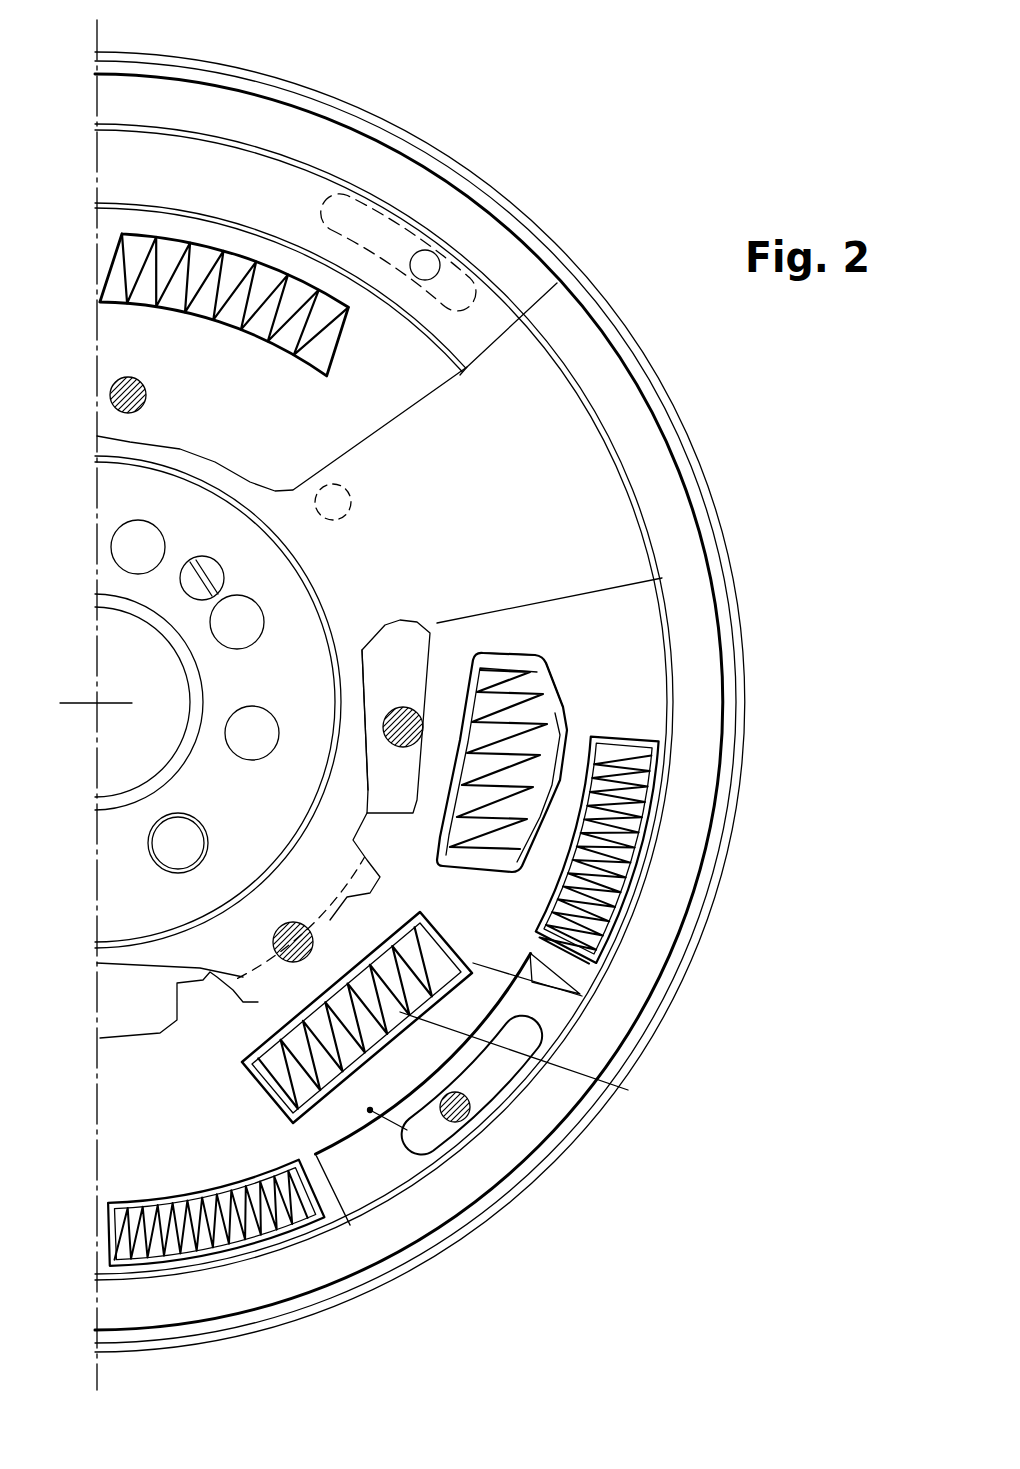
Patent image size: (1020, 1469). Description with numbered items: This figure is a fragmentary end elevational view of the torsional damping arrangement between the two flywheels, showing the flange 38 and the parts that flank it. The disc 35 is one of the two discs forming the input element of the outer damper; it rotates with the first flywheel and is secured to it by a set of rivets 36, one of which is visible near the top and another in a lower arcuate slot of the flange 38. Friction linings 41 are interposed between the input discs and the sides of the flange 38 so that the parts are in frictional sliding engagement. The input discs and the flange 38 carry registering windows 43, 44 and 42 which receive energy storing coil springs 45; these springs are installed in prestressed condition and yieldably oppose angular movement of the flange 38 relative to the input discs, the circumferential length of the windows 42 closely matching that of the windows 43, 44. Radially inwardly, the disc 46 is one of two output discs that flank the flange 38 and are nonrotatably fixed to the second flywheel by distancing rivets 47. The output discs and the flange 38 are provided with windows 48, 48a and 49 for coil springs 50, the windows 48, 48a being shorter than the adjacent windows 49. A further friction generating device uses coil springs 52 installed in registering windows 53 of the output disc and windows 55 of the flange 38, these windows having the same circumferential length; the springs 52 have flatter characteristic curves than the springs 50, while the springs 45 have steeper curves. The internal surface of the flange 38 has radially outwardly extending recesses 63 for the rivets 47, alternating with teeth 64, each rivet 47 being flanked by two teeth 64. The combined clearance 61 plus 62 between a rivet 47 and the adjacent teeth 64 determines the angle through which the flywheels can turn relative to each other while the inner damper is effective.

The disc 35 is at (497, 327).
The rivets 36 is at (438, 260).
The flange 38 is at (603, 607).
The friction linings 41 is at (467, 1222).
The windows 42 is at (413, 1240).
The windows 43 is at (357, 1017).
The windows 44 is at (390, 1273).
The coil springs 45 is at (636, 827).
The disc 46 is at (393, 390).
The rivets 47 is at (280, 930).
The window 48 is at (502, 762).
The window 48a is at (513, 668).
The windows 49 is at (541, 672).
The coil springs 50 is at (533, 743).
The coil springs 52 is at (545, 1082).
The window 53 is at (582, 996).
The windows 55 is at (530, 1062).
The clearance 61 is at (247, 970).
The clearance 62 is at (372, 886).
The recesses 63 is at (372, 889).
The teeth 64 is at (383, 837).